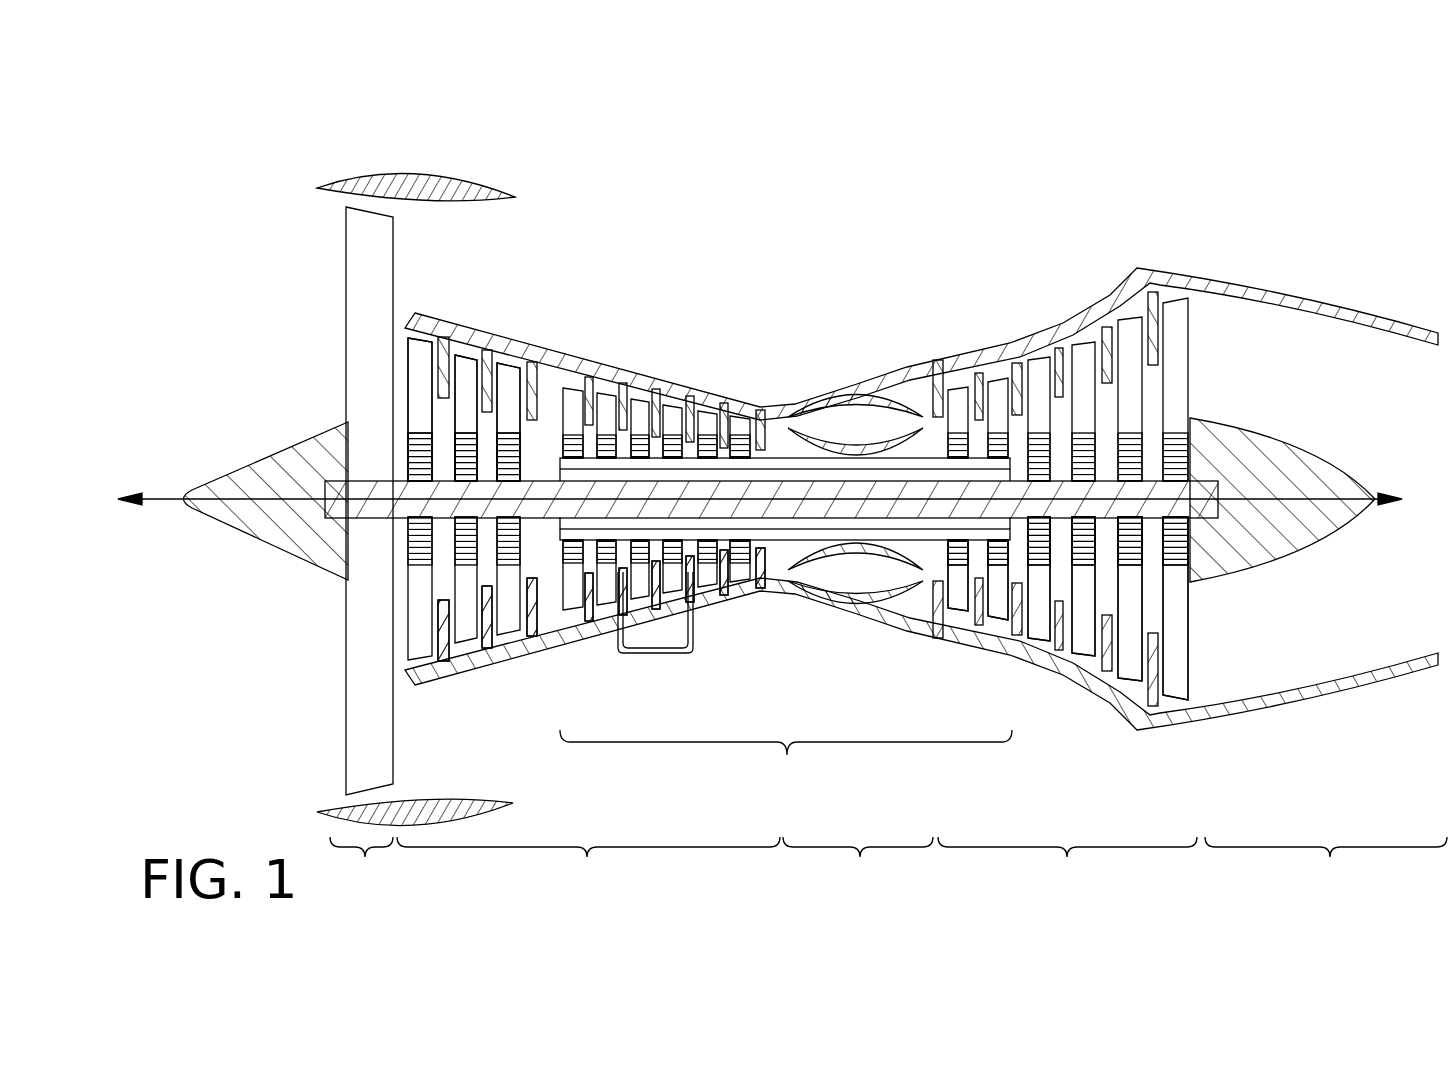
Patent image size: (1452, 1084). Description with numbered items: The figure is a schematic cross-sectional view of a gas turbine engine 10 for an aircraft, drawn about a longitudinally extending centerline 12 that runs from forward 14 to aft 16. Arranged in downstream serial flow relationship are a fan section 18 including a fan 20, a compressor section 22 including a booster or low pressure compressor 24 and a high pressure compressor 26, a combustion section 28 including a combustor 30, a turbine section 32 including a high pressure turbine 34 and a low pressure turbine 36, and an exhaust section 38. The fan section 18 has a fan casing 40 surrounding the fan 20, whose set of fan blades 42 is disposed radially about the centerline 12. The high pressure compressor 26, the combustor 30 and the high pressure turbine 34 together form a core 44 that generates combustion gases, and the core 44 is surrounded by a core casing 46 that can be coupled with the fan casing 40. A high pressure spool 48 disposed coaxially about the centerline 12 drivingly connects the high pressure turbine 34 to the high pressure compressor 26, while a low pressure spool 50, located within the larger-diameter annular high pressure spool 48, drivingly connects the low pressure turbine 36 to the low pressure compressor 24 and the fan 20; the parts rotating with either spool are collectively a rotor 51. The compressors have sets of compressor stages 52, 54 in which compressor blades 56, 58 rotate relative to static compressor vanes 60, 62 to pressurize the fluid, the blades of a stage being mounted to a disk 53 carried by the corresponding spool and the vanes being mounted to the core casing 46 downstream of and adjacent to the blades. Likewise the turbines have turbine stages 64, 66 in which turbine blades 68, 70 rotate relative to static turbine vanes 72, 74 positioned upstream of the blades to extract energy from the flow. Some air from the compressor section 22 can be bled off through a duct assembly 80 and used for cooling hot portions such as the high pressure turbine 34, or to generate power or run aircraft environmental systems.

The gas turbine engine 10 is at (283, 123).
The centerline 12 is at (258, 497).
The forward 14 is at (150, 484).
The aft 16 is at (1385, 499).
The fan section 18 is at (368, 860).
The fan 20 is at (309, 501).
The compressor section 22 is at (587, 857).
The low pressure compressor 24 is at (551, 682).
The high pressure compressor 26 is at (736, 637).
The combustion section 28 is at (860, 857).
The combustor 30 is at (898, 370).
The turbine section 32 is at (1067, 857).
The high pressure turbine 34 is at (940, 672).
The low pressure turbine 36 is at (1071, 720).
The exhaust section 38 is at (1330, 857).
The fan casing 40 is at (426, 175).
The fan blades 42 is at (363, 712).
The core 44 is at (787, 755).
The core casing 46 is at (830, 378).
The HP shaft or spool 48 is at (787, 490).
The LP shaft or spool 50 is at (540, 493).
The rotor 51 is at (689, 454).
The compressor stages 52 is at (471, 447).
The disk 53 is at (508, 452).
The compressor stages 54 is at (664, 421).
The compressor blades 56 is at (418, 348).
The compressor blades 58 is at (590, 393).
The static compressor vanes 60 is at (443, 370).
The static compressor vanes 62 is at (575, 398).
The turbine stages 64 is at (961, 449).
The turbine stages 66 is at (1091, 447).
The turbine blades 68 is at (1002, 387).
The turbine blades 70 is at (1127, 343).
The static turbine vanes 72 is at (980, 368).
The static turbine vanes 74 is at (1107, 337).
The duct assembly 80 is at (655, 675).